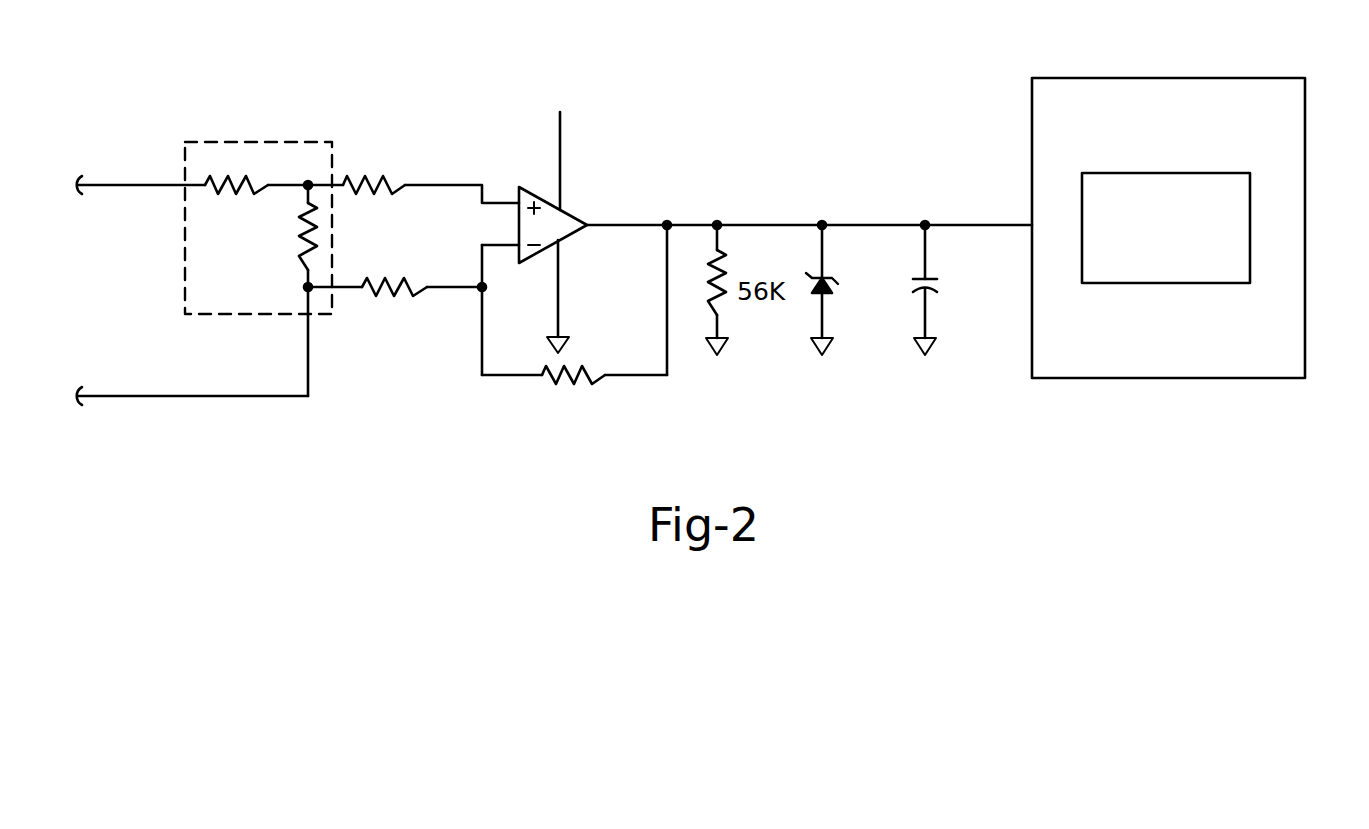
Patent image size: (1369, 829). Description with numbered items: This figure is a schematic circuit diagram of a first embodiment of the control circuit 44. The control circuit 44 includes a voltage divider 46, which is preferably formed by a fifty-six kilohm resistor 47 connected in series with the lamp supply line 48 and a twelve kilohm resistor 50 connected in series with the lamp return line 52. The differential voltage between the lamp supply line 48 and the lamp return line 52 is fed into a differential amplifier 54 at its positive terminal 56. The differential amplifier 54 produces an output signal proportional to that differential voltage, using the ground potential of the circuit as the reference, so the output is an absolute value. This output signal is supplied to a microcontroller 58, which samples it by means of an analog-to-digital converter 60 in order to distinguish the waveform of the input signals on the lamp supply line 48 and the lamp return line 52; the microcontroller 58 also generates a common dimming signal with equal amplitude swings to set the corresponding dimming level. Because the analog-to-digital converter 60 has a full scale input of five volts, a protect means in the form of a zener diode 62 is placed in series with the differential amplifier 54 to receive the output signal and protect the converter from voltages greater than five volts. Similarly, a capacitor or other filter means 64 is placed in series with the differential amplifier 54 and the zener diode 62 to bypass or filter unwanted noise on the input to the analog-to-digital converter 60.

The control circuit 44 is at (498, 227).
The voltage divider 46 is at (288, 195).
The 56 KΩ resistor 47 is at (262, 183).
The lamp supply line 48 is at (118, 185).
The 12 KΩ resistor 50 is at (313, 243).
The lamp return line 52 is at (308, 364).
The differential amplifier 54 is at (533, 193).
The positive terminal 56 is at (518, 198).
The microcontroller 58 is at (1190, 206).
The analog-to-digital converter 60 is at (1160, 173).
The zener diode 62 is at (824, 242).
The capacitor or other filter means 64 is at (928, 243).